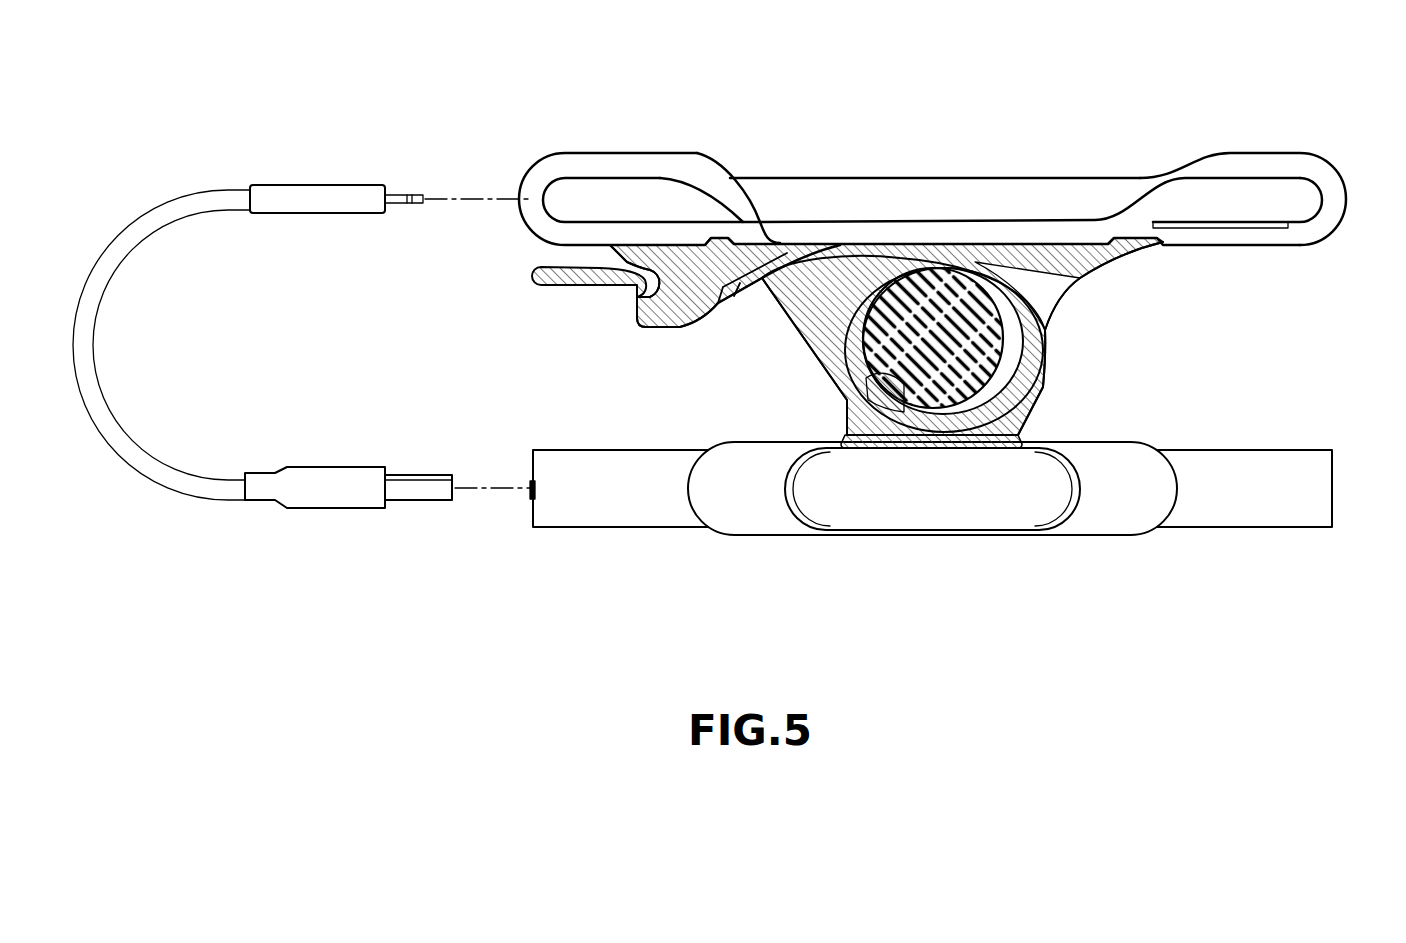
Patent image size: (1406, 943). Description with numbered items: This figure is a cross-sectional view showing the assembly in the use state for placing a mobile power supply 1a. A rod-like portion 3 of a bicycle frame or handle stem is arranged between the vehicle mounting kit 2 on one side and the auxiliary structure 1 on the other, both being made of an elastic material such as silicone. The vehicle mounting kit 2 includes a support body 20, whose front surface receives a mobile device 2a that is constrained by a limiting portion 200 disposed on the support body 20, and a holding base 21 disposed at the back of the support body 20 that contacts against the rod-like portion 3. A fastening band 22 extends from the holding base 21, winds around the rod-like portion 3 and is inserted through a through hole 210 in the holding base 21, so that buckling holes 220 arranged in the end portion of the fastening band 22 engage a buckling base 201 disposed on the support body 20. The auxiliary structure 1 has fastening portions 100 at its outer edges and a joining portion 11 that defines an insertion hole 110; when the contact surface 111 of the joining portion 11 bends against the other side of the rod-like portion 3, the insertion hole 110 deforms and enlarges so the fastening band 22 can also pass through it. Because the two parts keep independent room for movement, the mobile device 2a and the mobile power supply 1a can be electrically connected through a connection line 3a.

The auxiliary structure 1 is at (931, 536).
The mobile power supply 1a is at (1280, 500).
The fastening portion 100 is at (1155, 495).
The insertion hole 110 is at (1024, 421).
The joining portion 11 is at (970, 410).
The contact surface 111 is at (877, 372).
The vehicle mounting kit 2 is at (956, 310).
The mobile device 2a is at (853, 192).
The limiting portion 200 is at (1316, 170).
The support body 20 is at (1235, 236).
The buckling base 201 is at (643, 313).
The holding base 21 is at (828, 322).
The through hole 210 is at (1050, 294).
The fastening band 22 is at (1010, 277).
The buckling hole 220 is at (722, 305).
The rod-like portion 3 is at (992, 372).
The connection line 3a is at (167, 213).